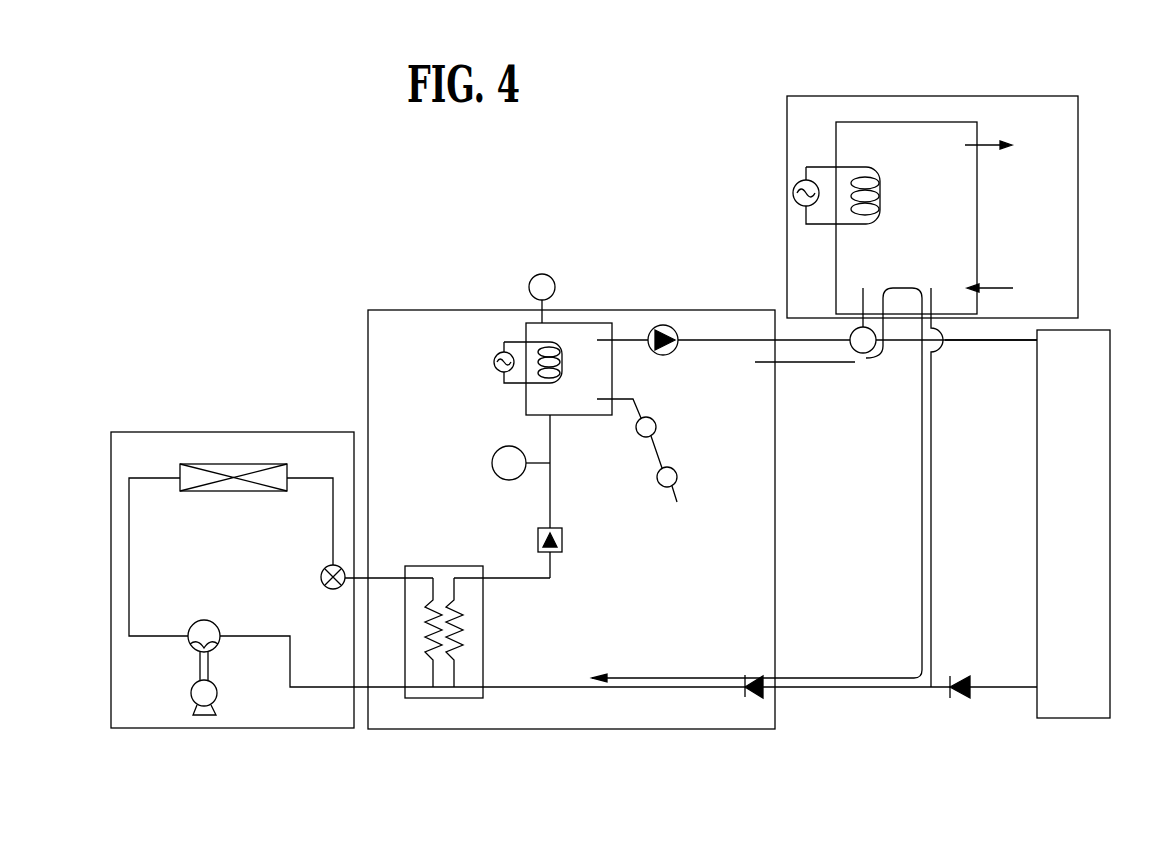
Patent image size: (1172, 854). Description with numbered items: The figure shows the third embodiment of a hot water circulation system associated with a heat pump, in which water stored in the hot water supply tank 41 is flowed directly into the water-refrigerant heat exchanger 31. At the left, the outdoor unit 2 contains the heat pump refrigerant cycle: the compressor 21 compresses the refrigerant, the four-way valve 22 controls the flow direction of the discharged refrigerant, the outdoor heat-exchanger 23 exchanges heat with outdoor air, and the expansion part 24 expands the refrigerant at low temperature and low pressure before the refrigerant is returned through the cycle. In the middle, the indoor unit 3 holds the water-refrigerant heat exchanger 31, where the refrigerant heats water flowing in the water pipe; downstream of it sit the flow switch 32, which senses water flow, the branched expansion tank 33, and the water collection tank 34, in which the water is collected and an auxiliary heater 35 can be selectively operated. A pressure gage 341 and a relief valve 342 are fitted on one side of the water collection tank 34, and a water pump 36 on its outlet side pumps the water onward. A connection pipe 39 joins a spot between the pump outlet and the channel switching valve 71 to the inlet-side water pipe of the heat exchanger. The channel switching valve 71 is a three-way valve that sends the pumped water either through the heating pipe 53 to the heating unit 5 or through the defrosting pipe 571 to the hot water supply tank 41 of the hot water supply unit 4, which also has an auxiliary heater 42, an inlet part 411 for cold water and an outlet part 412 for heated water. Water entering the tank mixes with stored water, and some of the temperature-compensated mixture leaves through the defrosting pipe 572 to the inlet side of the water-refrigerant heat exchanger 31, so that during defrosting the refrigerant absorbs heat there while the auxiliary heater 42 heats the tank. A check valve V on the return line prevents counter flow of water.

The outdoor unit 2 is at (229, 730).
The compressor 21 is at (220, 693).
The four-way valve 22 is at (206, 618).
The outdoor heat-exchanger 23 is at (232, 492).
The expansion part 24 is at (321, 577).
The indoor unit 3 is at (593, 731).
The water-refrigerant heat exchanger 31 is at (440, 565).
The flow switch 32 is at (538, 540).
The expansion tank 33 is at (497, 450).
The water collection tank 34 is at (583, 418).
The pressure gage 341 is at (656, 421).
The relief valve 342 is at (660, 486).
The auxiliary heater 35 is at (504, 344).
The water pump 36 is at (663, 325).
The connection pipe 39 is at (805, 436).
The hot water supply unit 4 is at (1080, 212).
The hot water supply tank 41 is at (940, 122).
The inlet part 411 is at (1014, 288).
The outlet part 412 is at (1014, 145).
The auxiliary heater 42 is at (820, 167).
The heating unit 5 is at (1110, 535).
The heating pipe 53 is at (985, 345).
The defrosting pipe 571 is at (853, 300).
The defrosting pipe 572 is at (932, 450).
The channel switching valve 71 is at (860, 358).
The check valve V is at (952, 700).